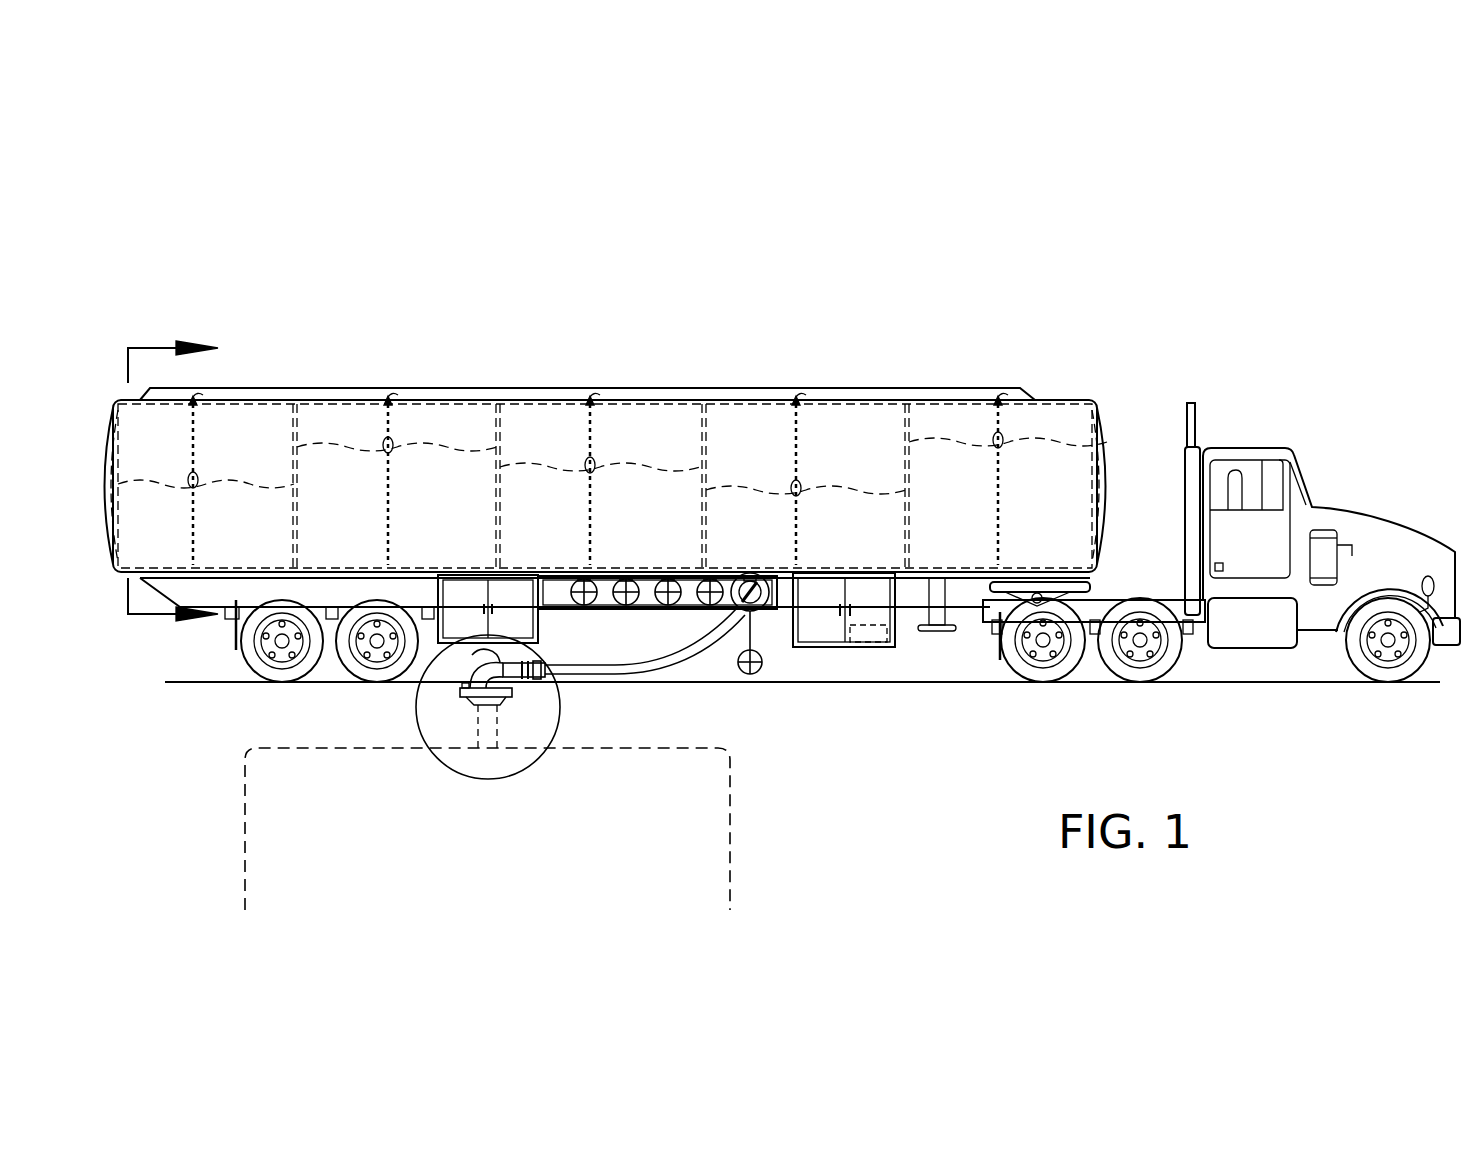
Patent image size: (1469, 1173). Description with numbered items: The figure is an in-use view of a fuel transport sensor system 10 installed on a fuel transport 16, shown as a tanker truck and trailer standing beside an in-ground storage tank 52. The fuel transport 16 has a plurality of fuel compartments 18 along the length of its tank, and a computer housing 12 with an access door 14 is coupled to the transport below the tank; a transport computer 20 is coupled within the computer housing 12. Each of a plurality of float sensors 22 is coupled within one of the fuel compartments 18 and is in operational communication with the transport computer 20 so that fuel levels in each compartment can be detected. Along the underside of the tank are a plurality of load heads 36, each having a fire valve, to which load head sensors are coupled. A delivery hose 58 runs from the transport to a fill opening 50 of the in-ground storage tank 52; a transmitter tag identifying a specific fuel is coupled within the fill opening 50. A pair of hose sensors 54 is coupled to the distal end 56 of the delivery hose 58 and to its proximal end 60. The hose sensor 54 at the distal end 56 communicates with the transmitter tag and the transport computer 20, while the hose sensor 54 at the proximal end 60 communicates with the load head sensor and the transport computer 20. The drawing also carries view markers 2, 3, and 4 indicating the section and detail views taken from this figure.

The fuel transport sensor system 10 is at (1148, 251).
The computer housing 12 is at (830, 644).
The access door 14 is at (813, 625).
The fuel transport 16 is at (1238, 448).
The fuel compartments 18 is at (948, 428).
The transport computer 20 is at (878, 645).
The float sensors 22 is at (193, 468).
The load heads 36 is at (597, 576).
The fill opening 50 is at (463, 688).
The in-ground storage tank 52 is at (318, 778).
The hose sensors 54 is at (541, 662).
The distal end 56 is at (533, 682).
The delivery hose 58 is at (622, 677).
The proximal end 60 is at (727, 660).
The section line 2 is at (179, 481).
The detail view 3 is at (740, 603).
The detail view 4 is at (440, 754).